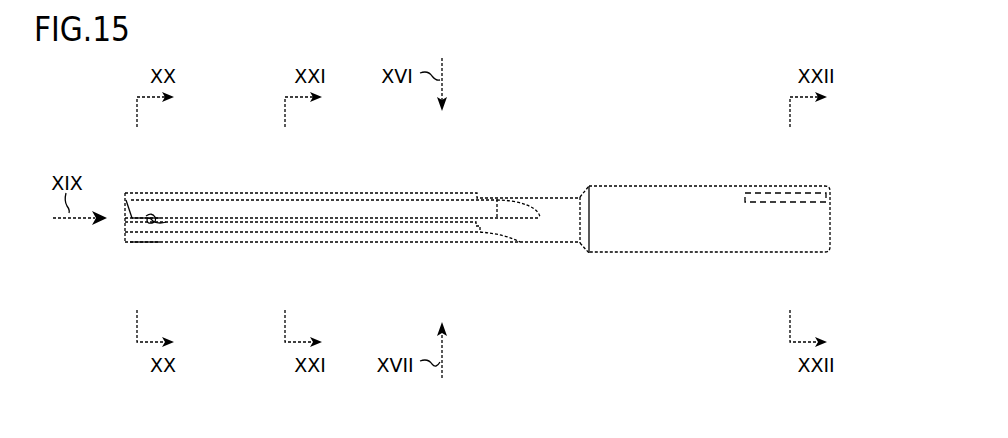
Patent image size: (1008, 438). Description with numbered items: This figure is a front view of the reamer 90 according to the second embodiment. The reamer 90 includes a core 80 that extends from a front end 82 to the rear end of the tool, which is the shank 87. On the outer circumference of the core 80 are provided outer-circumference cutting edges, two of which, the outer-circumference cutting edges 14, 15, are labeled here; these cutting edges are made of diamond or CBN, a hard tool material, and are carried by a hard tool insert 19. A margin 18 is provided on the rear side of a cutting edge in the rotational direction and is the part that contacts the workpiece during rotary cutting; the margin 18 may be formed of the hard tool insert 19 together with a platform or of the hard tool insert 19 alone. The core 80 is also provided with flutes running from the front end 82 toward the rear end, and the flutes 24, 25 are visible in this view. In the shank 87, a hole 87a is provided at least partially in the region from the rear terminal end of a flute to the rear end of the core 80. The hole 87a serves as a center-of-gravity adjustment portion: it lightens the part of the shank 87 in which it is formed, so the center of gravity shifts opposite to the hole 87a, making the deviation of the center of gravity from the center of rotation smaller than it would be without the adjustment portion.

The outer-circumference cutting edge 14 is at (130, 245).
The outer-circumference cutting edge 15 is at (127, 212).
The margin 18 is at (135, 216).
The hard tool insert 19 is at (148, 220).
The flute 24 is at (353, 232).
The flute 25 is at (353, 218).
The core 80 is at (567, 240).
The front end 82 is at (123, 225).
The shank 87 is at (671, 185).
The hole 87a is at (765, 183).
The reamer 90 is at (852, 134).